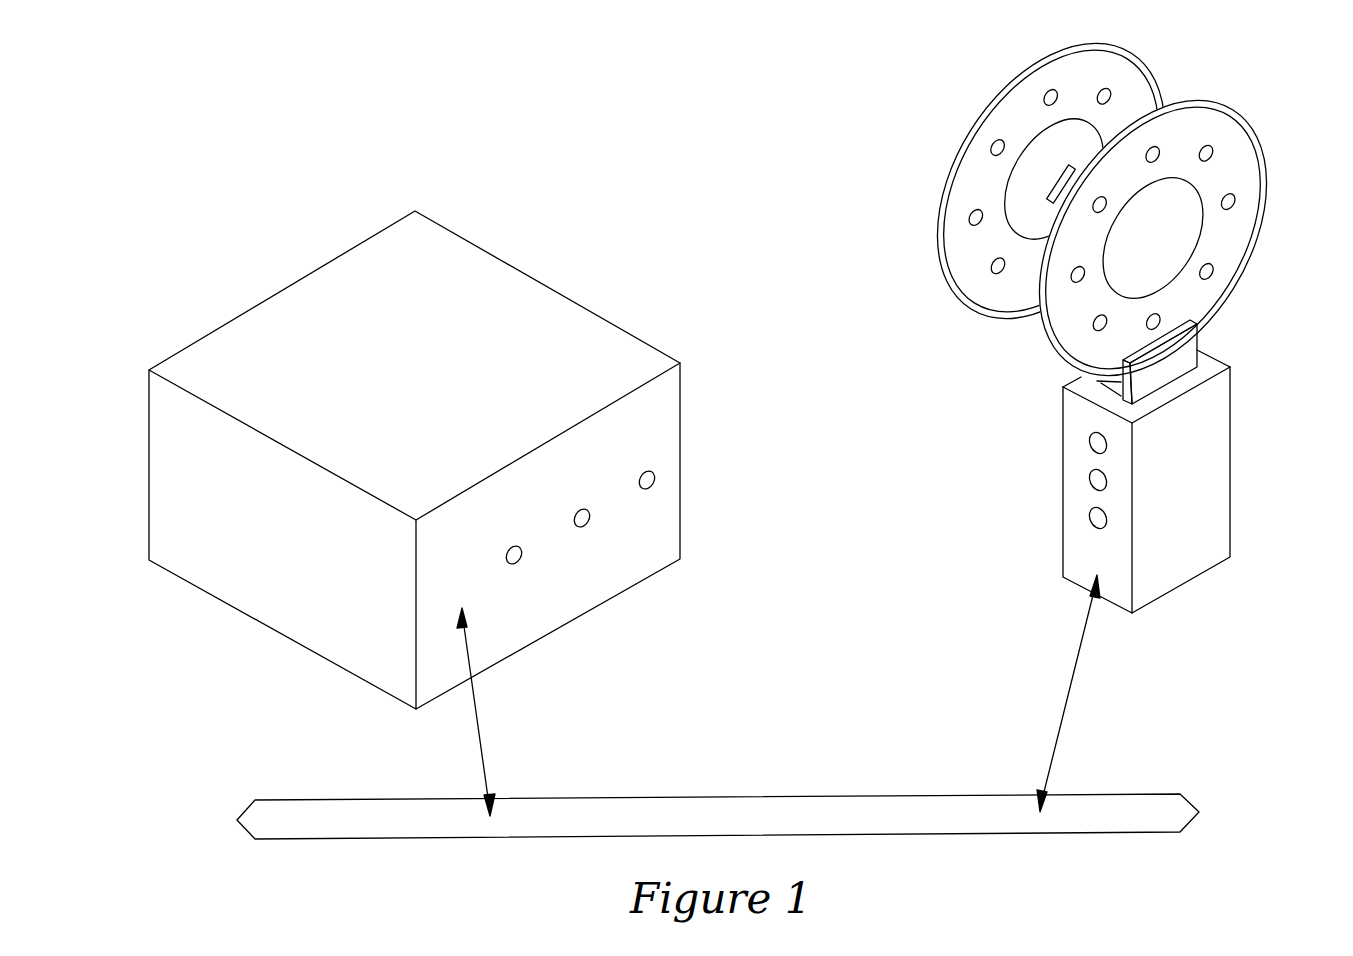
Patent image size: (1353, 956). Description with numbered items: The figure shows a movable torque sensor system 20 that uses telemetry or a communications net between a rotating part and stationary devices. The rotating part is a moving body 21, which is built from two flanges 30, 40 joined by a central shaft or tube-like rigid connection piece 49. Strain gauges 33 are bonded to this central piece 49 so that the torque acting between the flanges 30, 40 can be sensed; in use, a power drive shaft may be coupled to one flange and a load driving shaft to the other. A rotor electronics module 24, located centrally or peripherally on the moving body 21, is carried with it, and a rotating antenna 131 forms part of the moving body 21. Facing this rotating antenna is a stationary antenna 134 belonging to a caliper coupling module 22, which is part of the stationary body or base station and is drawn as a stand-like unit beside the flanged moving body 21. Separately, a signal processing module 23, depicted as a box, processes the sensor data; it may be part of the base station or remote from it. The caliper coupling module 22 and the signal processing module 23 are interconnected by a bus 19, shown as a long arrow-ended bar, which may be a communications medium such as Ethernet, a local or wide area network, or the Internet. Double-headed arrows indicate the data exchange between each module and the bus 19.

The bus 19 is at (835, 810).
The system 20 is at (600, 130).
The moving body 21 is at (1218, 237).
The caliper coupling module 22 is at (1217, 468).
The signal processing module 23 is at (327, 285).
The rotor electronics module 24 is at (1167, 267).
The flange 30 is at (1045, 63).
The strain gauges 33 is at (1053, 190).
The flange 40 is at (1227, 163).
The central shaft or tube-like rigid connection piece 49 is at (1015, 223).
The rotating antenna 131 is at (1052, 322).
The stationary antenna 134 is at (1182, 353).